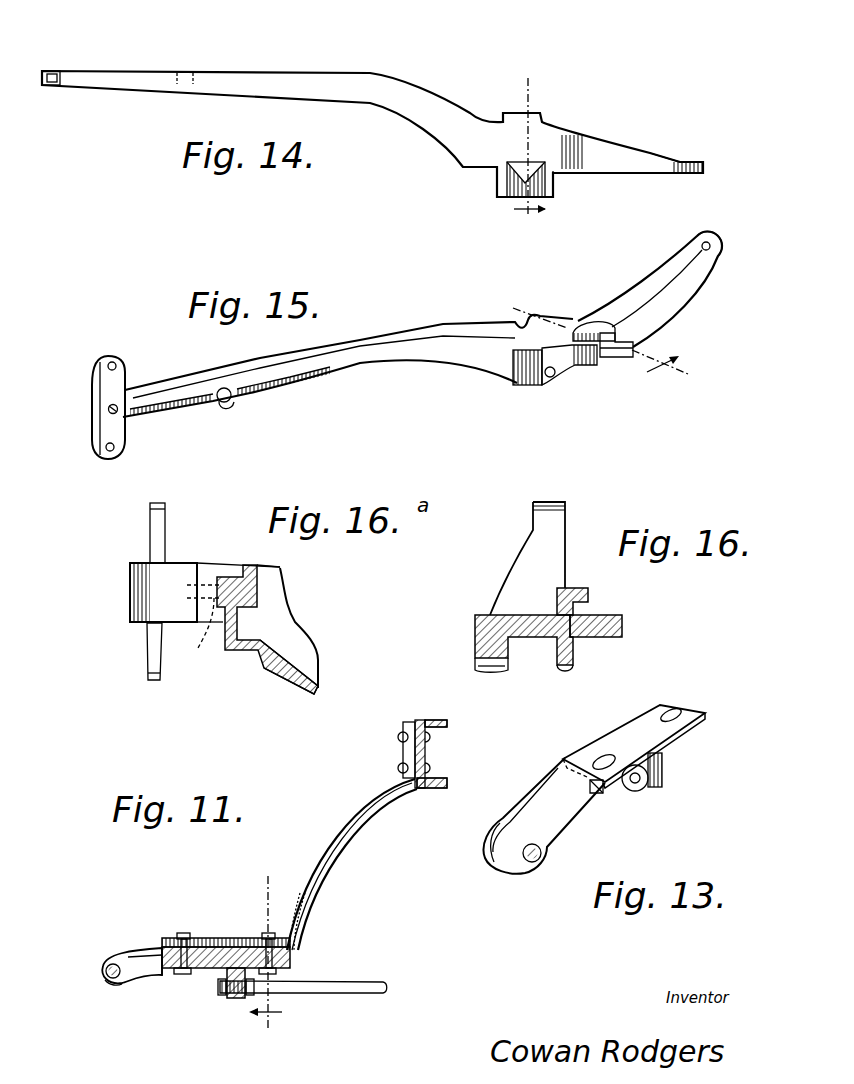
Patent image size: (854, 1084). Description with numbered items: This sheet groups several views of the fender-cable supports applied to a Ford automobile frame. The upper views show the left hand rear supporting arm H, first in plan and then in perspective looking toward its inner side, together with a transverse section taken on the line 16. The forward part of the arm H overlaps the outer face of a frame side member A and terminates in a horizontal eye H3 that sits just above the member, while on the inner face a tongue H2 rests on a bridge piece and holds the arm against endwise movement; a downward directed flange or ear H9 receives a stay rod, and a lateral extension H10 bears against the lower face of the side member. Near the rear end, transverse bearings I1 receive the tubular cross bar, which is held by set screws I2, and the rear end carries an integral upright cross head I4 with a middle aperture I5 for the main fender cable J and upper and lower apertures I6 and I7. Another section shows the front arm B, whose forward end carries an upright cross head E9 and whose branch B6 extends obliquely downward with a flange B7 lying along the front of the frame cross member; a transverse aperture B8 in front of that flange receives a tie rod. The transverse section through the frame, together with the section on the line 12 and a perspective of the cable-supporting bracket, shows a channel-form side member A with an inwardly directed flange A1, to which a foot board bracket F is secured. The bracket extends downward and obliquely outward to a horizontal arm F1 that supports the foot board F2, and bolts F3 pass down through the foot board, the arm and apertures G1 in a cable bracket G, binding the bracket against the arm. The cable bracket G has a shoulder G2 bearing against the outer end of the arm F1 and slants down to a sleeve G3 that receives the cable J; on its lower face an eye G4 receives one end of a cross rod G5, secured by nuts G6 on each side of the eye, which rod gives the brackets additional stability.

In FIG. 14, the supporting arm H is at (340, 78).
In FIG. 15, the supporting arm H is at (365, 338).
In FIG. 16, the supporting arm H is at (506, 634).
In FIG. 14, the tongue H2 is at (513, 163).
In FIG. 15, the tongue H2 is at (600, 327).
In FIG. 16, the tongue H2 is at (570, 590).
In FIG. 14, the horizontal eye H3 is at (697, 160).
In FIG. 15, the horizontal eye H3 is at (716, 243).
In FIG. 16, the horizontal eye H3 is at (533, 514).
In FIG. 15, the downward directed flange or ear H9 is at (545, 386).
In FIG. 14, the lateral extension H10 is at (512, 197).
In FIG. 15, the lateral extension H10 is at (620, 357).
In FIG. 16, the lateral extension H10 is at (625, 628).
In FIG. 15, the bearing I1 is at (233, 400).
In FIG. 15, the set screw I2 is at (227, 412).
In FIG. 14, the cross head I4 is at (47, 88).
In FIG. 15, the cross head I4 is at (106, 386).
In FIG. 15, the aperture or eye I5 is at (110, 416).
In FIG. 15, the aperture or eye I6 is at (116, 364).
In FIG. 15, the aperture or eye I7 is at (105, 456).
In FIG. 14, the section line 16 is at (531, 146).
In FIG. 15, the section line 16 is at (602, 337).
In FIG. 11, the section line 12 is at (268, 952).
In FIG. 16A, the cross head E9 is at (150, 538).
In FIG. 16A, the arm B is at (177, 568).
In FIG. 16A, the branch B6 is at (290, 683).
In FIG. 16A, the flange B7 is at (300, 644).
In FIG. 16A, the transverse aperture B8 is at (206, 632).
In FIG. 11, the frame side member A is at (448, 754).
In FIG. 11, the flange A1 is at (432, 720).
In FIG. 11, the foot board bracket F is at (364, 808).
In FIG. 11, the horizontal arm F1 is at (212, 946).
In FIG. 11, the foot board F2 is at (213, 946).
In FIG. 11, the bolt F3 is at (185, 935).
In FIG. 11, the cable bracket G is at (143, 968).
In FIG. 13, the cable bracket G is at (594, 789).
In FIG. 13, the aperture G1 is at (601, 757).
In FIG. 11, the shoulder G2 is at (163, 957).
In FIG. 13, the shoulder G2 is at (596, 800).
In FIG. 11, the sleeve G3 is at (108, 983).
In FIG. 13, the sleeve G3 is at (508, 852).
In FIG. 11, the eye G4 is at (235, 999).
In FIG. 13, the eye G4 is at (663, 775).
In FIG. 11, the cross rod G5 is at (332, 993).
In FIG. 11, the nut G6 is at (222, 992).
In FIG. 11, the main fender cable J is at (110, 981).